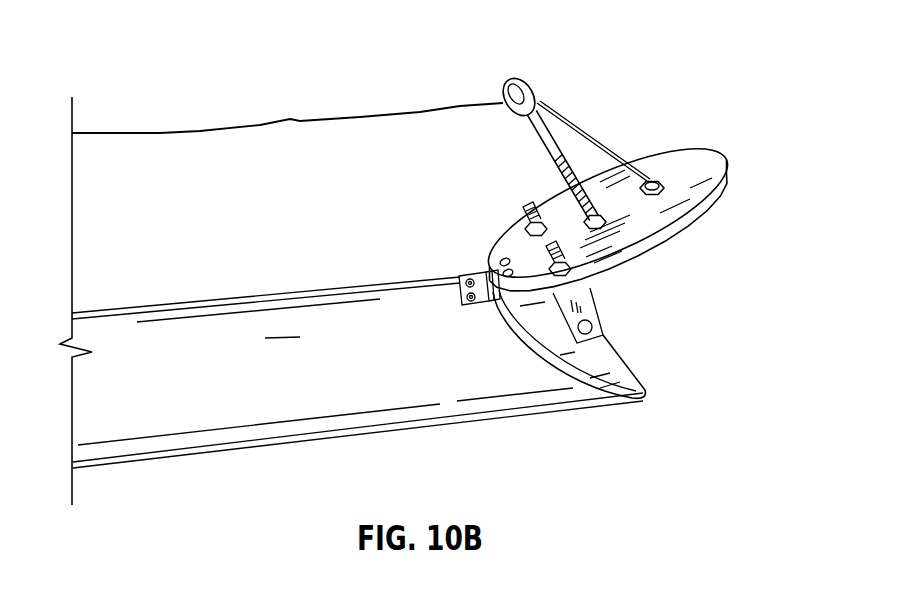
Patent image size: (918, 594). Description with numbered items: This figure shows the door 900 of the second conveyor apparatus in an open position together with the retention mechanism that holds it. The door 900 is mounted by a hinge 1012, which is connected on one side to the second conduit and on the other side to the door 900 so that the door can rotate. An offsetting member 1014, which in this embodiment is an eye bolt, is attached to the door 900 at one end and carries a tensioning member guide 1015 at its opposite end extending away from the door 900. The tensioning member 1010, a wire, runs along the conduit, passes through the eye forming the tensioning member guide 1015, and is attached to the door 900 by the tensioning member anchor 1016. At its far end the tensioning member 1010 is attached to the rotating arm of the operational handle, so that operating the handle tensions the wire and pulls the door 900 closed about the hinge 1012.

The tensioning member 1010 is at (132, 132).
The hinge 1012 is at (468, 272).
The door 900 is at (726, 170).
The tensioning member guide 1015 is at (521, 80).
The offsetting member 1014 is at (560, 133).
The tensioning member anchor 1016 is at (655, 178).